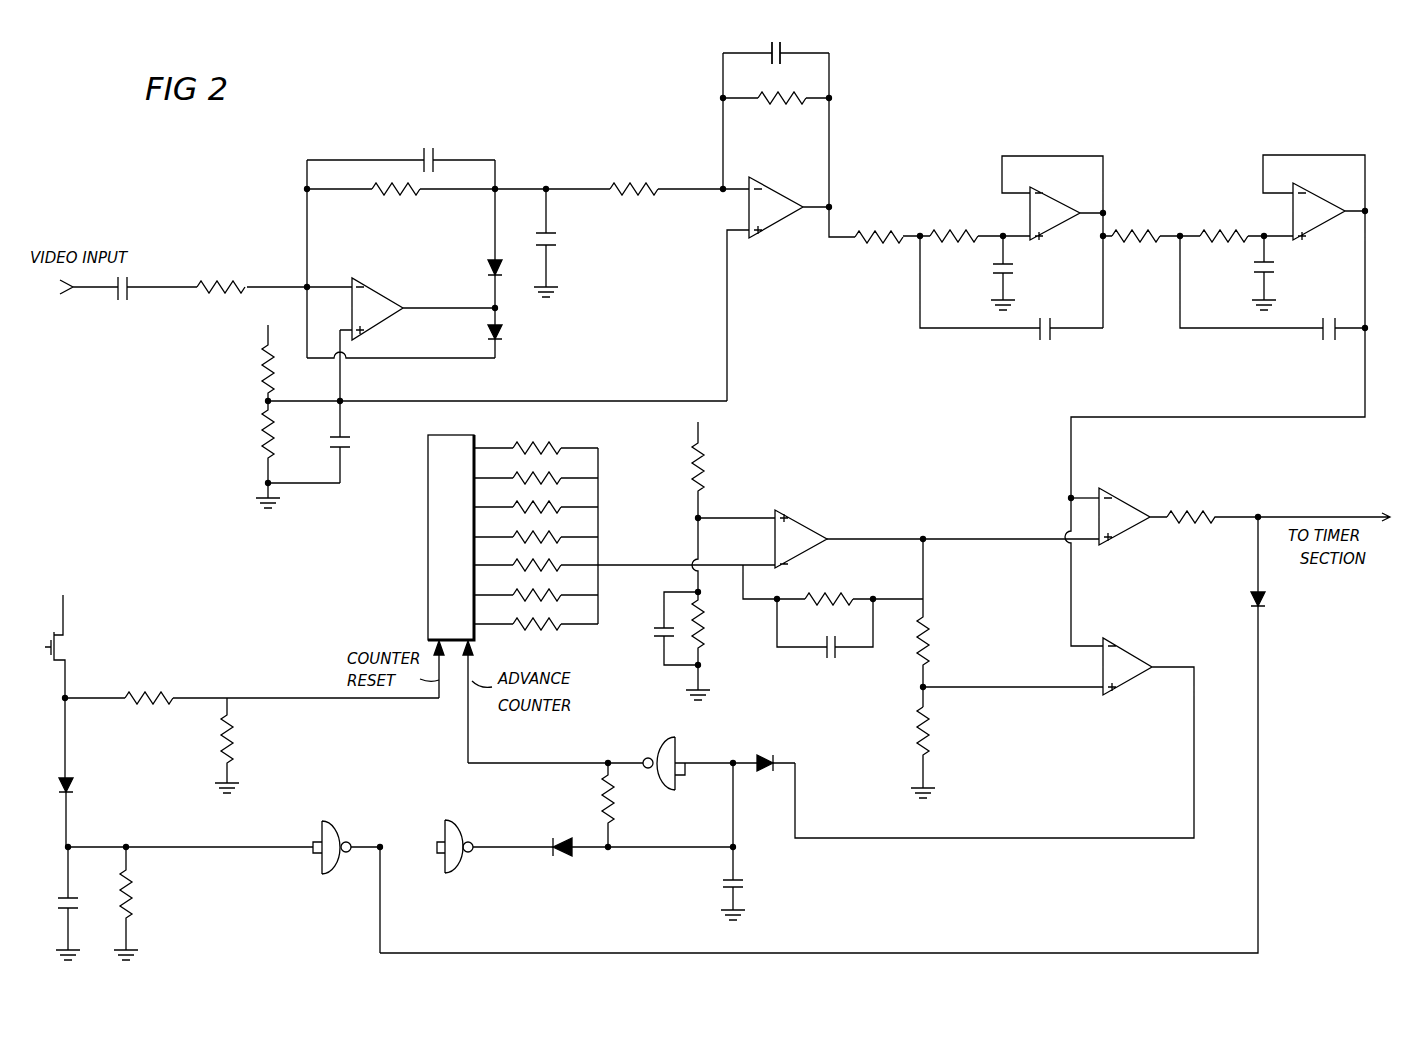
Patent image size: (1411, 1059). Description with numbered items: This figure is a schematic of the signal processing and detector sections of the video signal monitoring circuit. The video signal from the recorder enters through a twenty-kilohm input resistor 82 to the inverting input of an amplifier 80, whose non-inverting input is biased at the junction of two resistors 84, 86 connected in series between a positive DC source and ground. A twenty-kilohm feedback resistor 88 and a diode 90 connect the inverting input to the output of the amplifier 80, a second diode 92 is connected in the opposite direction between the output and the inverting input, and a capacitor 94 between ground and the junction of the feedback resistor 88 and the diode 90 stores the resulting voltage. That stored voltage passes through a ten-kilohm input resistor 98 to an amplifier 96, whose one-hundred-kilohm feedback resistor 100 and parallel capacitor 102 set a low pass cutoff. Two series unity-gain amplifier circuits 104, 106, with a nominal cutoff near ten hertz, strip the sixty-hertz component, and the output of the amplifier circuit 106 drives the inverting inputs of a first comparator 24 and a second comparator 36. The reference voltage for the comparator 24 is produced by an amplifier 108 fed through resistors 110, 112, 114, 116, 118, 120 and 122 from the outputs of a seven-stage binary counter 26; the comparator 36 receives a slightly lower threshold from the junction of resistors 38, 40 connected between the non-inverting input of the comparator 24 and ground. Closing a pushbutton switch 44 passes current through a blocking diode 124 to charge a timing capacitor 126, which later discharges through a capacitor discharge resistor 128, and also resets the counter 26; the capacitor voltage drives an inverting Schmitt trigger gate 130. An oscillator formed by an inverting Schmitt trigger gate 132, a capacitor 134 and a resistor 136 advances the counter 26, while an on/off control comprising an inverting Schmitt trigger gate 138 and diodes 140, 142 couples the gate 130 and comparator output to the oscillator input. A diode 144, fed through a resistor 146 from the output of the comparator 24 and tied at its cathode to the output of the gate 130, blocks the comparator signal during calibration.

The first comparator 24 is at (1116, 500).
The counter 26 is at (428, 540).
The second comparator 36 is at (1125, 655).
The resistor 38 is at (930, 617).
The resistor 40 is at (935, 736).
The pushbutton switch 44 is at (73, 645).
The amplifier 80 is at (369, 291).
The input resistor 82 is at (213, 283).
The resistor 84 is at (262, 366).
The resistor 86 is at (262, 454).
The feedback resistor 88 is at (417, 195).
The diode 90 is at (488, 266).
The diode 92 is at (503, 335).
The capacitor 94 is at (557, 245).
The amplifier 96 is at (765, 184).
The input resistor 98 is at (645, 183).
The feedback resistor 100 is at (775, 99).
The capacitor 102 is at (768, 45).
The amplifier circuit 104 is at (1042, 241).
The amplifier circuit 106 is at (1305, 241).
The amplifier 108 is at (815, 529).
The resistor 110 is at (560, 451).
The resistor 112 is at (560, 481).
The resistor 114 is at (560, 510).
The resistor 116 is at (560, 540).
The resistor 118 is at (561, 569).
The resistor 120 is at (560, 599).
The resistor 122 is at (560, 629).
The blocking diode 124 is at (75, 788).
The timing capacitor 126 is at (67, 897).
The capacitor discharge resistor 128 is at (132, 881).
The inverting Schmitt trigger gate 130 is at (340, 826).
The inverting Schmitt trigger gate 132 is at (680, 746).
The capacitor 134 is at (745, 879).
The resistor 136 is at (615, 808).
The inverting Schmitt trigger gate 138 is at (463, 832).
The diode 140 is at (570, 856).
The diode 142 is at (773, 756).
The diode 144 is at (1268, 598).
The resistor 146 is at (1200, 516).